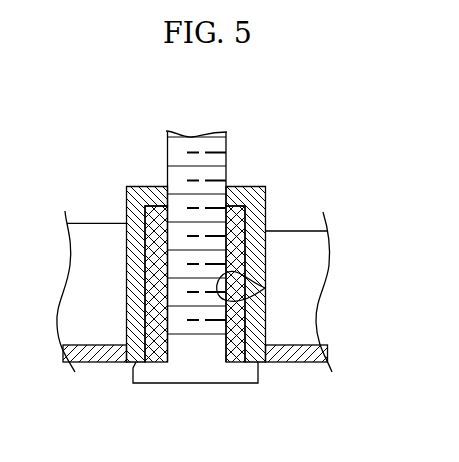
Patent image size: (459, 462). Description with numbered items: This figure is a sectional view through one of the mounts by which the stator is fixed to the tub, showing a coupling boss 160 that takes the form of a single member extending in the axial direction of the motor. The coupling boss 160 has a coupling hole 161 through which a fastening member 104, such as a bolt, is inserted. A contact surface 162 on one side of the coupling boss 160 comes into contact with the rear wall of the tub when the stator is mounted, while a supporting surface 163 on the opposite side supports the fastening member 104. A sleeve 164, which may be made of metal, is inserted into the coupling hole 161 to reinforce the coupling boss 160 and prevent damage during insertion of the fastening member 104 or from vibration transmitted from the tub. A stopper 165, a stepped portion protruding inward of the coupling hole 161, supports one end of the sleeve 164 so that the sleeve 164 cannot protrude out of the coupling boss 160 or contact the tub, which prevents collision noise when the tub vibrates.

The fastening member 104 is at (226, 138).
The coupling boss 160 is at (210, 268).
The coupling hole 161 is at (265, 288).
The contact surface 162 is at (140, 186).
The supporting surface 163 is at (134, 364).
The sleeve 164 is at (245, 252).
The stopper 165 is at (156, 208).